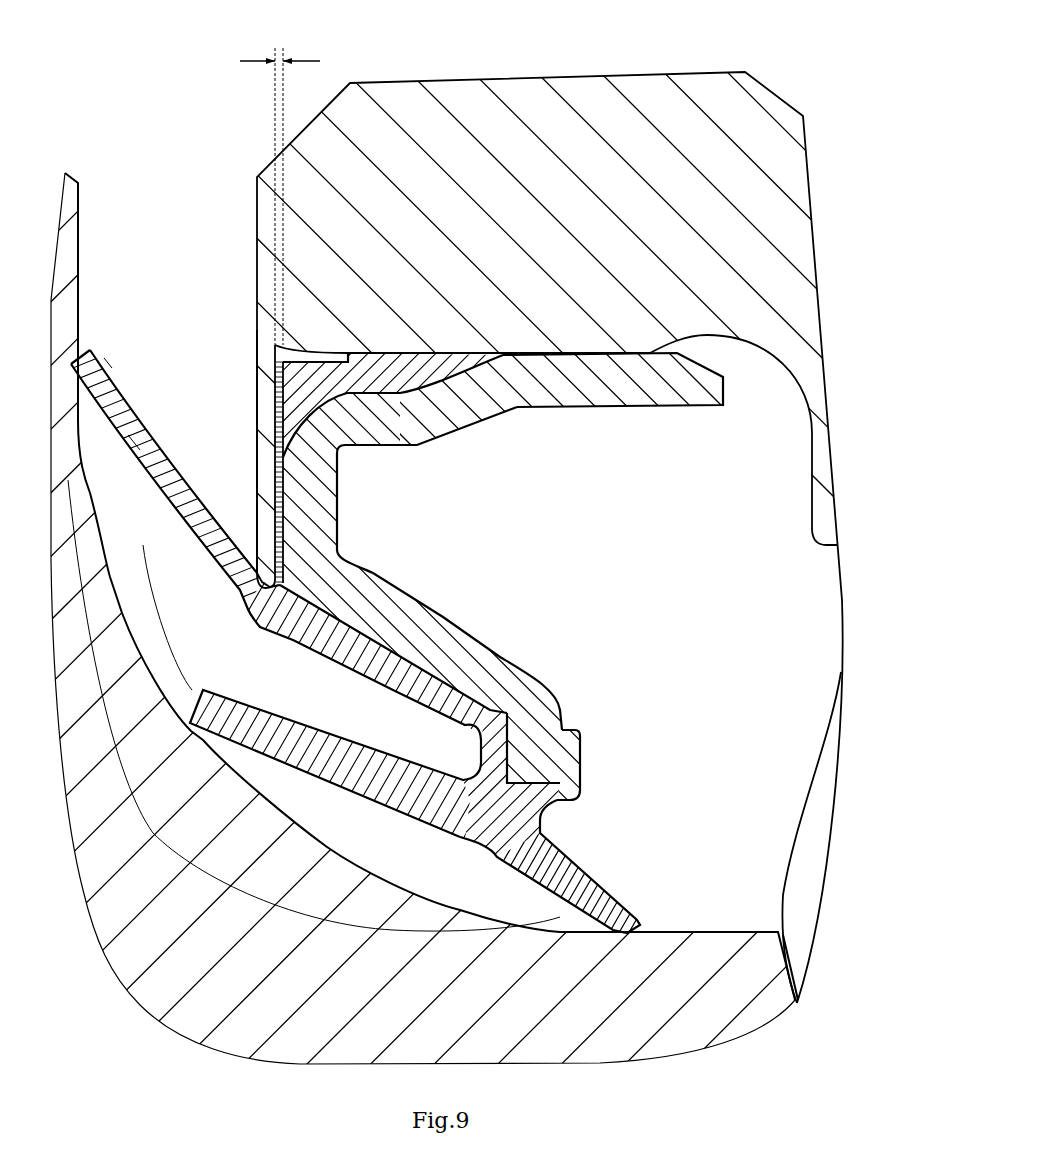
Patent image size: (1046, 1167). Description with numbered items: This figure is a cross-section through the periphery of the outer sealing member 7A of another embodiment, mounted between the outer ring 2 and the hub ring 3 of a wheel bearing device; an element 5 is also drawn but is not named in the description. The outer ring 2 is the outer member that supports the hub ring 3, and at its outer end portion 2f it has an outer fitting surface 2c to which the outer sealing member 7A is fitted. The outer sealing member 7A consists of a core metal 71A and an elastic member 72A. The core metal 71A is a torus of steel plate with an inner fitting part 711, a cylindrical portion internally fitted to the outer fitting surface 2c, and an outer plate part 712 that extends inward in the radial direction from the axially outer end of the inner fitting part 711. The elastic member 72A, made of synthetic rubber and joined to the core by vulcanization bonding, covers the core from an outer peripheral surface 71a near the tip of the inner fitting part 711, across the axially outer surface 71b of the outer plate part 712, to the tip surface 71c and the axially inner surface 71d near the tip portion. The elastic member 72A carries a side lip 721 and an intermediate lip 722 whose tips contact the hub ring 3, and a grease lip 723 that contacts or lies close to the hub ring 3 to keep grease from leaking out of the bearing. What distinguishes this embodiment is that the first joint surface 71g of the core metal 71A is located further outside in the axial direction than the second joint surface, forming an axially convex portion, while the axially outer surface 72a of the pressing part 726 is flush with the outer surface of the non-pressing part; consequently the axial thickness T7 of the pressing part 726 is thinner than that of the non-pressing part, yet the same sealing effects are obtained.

The outer ring 2 is at (645, 66).
The outer fitting surface 2c is at (575, 355).
The outer end portion 2f is at (265, 232).
The axial thickness T7 is at (280, 189).
The hub ring 3 is at (686, 927).
The rolling element (ball) 5 is at (800, 817).
The outer sealing member 7A is at (612, 706).
The core metal 71A is at (662, 462).
The inner fitting part 711 is at (638, 395).
The outer plate part 712 is at (330, 503).
The outer peripheral surface 71a is at (440, 380).
The axially outer surface 71b is at (257, 450).
The first joint surface 71g is at (257, 510).
The tip surface 71c is at (547, 807).
The axially inner surface 71d is at (583, 757).
The elastic member 72A is at (97, 32).
The side lip 721 is at (172, 490).
The intermediate lip 722 is at (128, 435).
The grease lip 723 is at (104, 358).
The pressing part 726 is at (143, 545).
The axially outer surface 72a is at (250, 600).